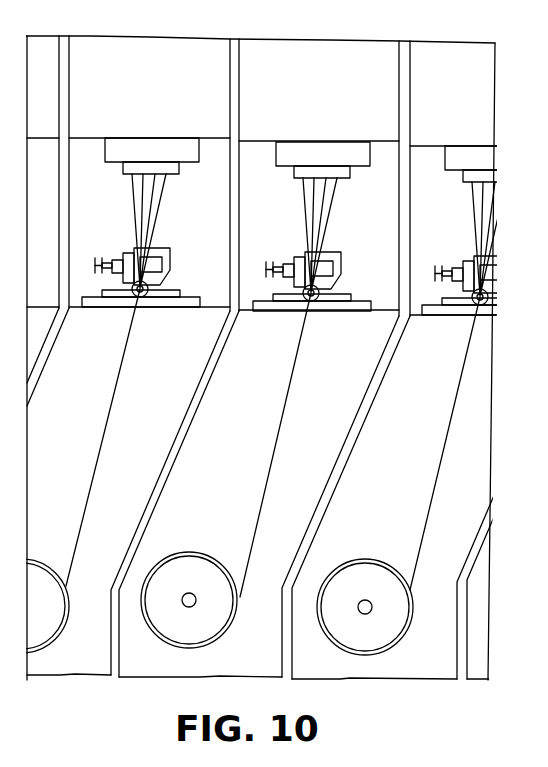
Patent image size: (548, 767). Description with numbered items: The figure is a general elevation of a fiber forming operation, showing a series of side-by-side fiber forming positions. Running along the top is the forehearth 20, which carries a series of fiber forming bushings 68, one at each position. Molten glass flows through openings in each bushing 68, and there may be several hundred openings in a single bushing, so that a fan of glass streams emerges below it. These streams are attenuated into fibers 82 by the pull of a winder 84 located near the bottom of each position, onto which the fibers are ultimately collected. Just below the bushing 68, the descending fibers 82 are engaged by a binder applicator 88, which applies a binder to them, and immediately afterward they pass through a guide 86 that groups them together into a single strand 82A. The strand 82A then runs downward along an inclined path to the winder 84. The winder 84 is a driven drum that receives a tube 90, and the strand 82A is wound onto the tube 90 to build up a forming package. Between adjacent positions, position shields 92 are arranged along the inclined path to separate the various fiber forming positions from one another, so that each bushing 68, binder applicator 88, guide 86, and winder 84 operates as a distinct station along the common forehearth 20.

The forehearth 20 is at (153, 107).
The fiber forming bushing 68 is at (123, 165).
The fibers 82 is at (142, 197).
The binder applicator 88 is at (160, 265).
The guide 86 is at (135, 296).
The position shields 92 is at (195, 423).
The strand 82A is at (107, 461).
The winder 84 is at (53, 628).
The tube 90 is at (47, 552).